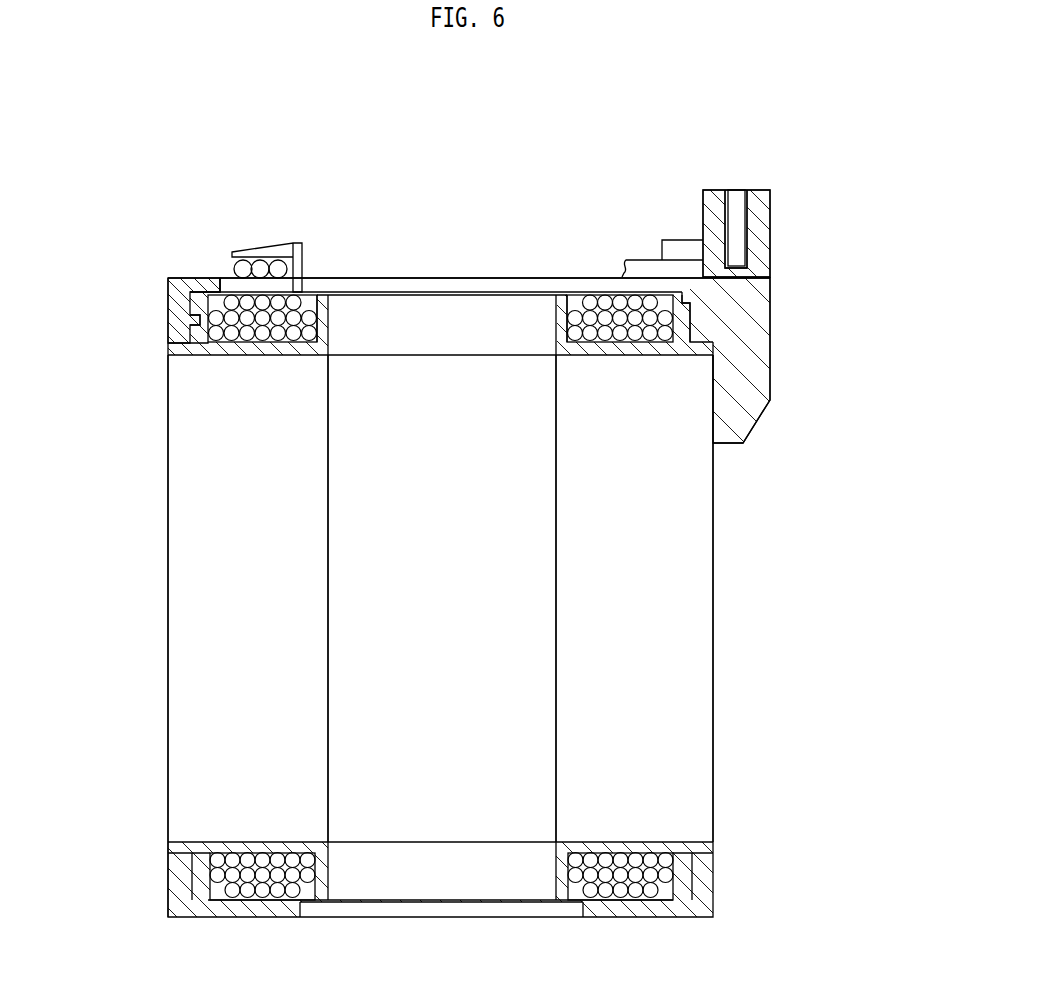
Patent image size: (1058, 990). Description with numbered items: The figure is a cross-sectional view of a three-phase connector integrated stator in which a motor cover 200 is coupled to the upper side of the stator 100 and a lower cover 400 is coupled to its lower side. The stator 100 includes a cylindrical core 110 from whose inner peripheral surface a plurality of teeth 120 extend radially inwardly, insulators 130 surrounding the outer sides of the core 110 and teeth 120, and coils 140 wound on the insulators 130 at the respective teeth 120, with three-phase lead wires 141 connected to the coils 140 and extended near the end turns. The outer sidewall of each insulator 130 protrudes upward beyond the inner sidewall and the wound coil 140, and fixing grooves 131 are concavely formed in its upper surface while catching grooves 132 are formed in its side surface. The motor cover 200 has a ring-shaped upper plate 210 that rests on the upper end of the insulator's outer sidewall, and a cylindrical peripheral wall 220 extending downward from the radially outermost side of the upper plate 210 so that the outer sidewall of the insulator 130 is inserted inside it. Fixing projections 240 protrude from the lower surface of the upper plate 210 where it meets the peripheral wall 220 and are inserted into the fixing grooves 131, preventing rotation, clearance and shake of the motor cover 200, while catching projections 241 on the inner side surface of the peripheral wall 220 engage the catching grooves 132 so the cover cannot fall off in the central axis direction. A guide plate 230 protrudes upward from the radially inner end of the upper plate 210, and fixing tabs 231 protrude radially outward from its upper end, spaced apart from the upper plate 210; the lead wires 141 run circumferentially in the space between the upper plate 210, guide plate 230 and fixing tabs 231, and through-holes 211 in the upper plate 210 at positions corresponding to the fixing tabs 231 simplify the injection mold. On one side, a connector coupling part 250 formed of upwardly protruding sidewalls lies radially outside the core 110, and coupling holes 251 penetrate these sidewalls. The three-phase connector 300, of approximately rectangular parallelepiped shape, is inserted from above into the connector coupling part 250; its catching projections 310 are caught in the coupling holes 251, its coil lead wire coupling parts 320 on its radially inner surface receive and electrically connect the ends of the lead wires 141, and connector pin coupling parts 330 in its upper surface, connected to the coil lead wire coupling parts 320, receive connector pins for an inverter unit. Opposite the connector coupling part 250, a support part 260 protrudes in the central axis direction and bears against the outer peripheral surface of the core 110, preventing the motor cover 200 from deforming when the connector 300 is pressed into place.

The stator 100 is at (728, 665).
The core 110 is at (680, 540).
The teeth 120 is at (630, 700).
The insulator 130 is at (525, 300).
The fixing grooves 131 is at (690, 300).
The catching grooves 132 is at (175, 330).
The coils 140 is at (557, 300).
The lead wires 141 is at (232, 298).
The motor cover 200 is at (775, 302).
The upper plate 210 is at (200, 278).
The through-holes 211 is at (198, 278).
The peripheral wall 220 is at (188, 320).
The guide plate 230 is at (295, 243).
The fixing tabs 231 is at (260, 260).
The fixing projections 240 is at (690, 284).
The catching projections 241 is at (198, 292).
The connector coupling part 250 is at (773, 275).
The coupling holes 251 is at (773, 245).
The support part 260 is at (745, 386).
The 3-phase connector 300 is at (757, 188).
The catching projections 310 is at (773, 227).
The coil lead wire coupling parts 320 is at (733, 250).
The connector pin coupling parts 330 is at (748, 190).
The lower cover 400 is at (713, 880).